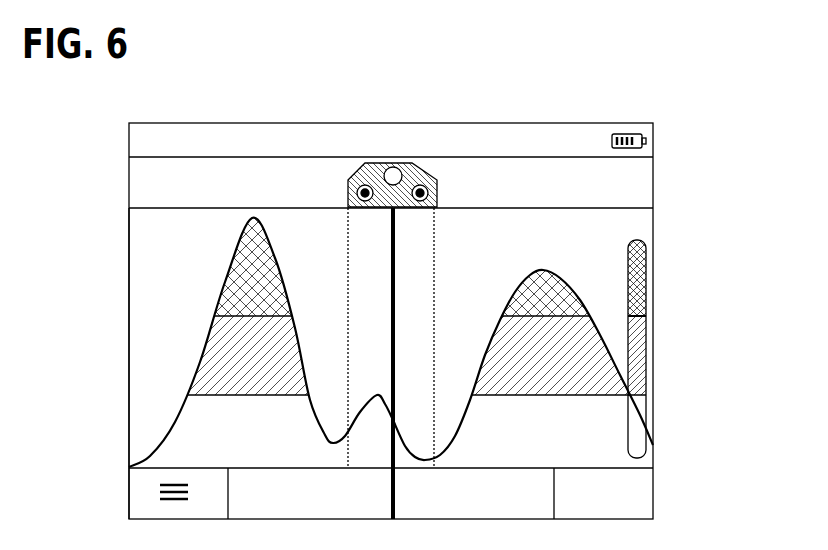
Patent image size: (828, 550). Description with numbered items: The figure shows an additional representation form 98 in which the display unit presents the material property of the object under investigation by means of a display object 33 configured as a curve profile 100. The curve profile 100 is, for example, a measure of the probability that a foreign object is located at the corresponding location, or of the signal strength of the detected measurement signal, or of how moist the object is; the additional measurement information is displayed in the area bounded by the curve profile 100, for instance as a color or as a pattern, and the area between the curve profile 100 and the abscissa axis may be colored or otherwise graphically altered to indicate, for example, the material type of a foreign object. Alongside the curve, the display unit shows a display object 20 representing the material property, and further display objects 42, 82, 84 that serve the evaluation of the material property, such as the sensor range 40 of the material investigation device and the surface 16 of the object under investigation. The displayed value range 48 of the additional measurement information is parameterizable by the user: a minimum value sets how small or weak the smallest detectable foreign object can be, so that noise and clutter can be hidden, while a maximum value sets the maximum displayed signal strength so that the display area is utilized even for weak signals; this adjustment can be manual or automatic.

The additional representation form 98 is at (669, 150).
The display object 84 is at (336, 363).
The surface of the object under investigation 16 is at (129, 208).
The display object 20 is at (165, 292).
The display object 33 is at (591, 360).
The curve profile 100 is at (563, 272).
The display object 82 is at (687, 339).
The displayed value range 48 is at (648, 357).
The display object 42 is at (561, 289).
The sensor range 40 is at (437, 368).